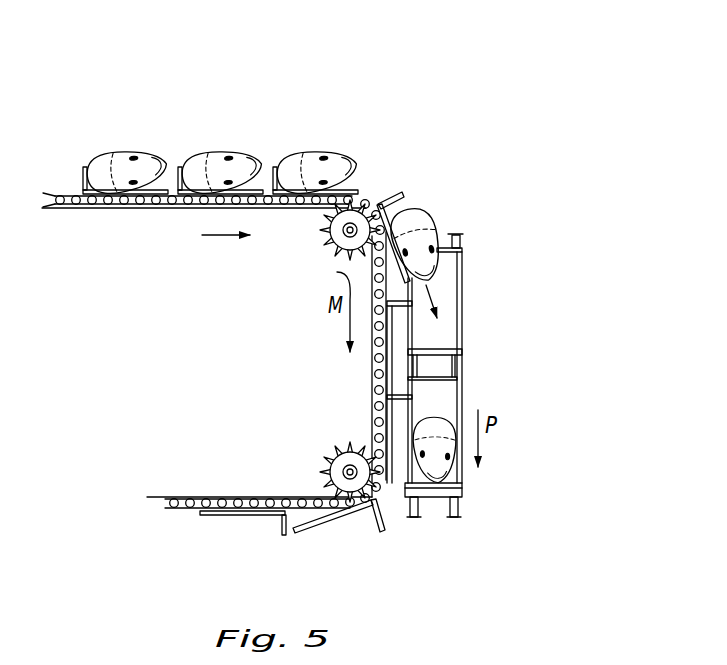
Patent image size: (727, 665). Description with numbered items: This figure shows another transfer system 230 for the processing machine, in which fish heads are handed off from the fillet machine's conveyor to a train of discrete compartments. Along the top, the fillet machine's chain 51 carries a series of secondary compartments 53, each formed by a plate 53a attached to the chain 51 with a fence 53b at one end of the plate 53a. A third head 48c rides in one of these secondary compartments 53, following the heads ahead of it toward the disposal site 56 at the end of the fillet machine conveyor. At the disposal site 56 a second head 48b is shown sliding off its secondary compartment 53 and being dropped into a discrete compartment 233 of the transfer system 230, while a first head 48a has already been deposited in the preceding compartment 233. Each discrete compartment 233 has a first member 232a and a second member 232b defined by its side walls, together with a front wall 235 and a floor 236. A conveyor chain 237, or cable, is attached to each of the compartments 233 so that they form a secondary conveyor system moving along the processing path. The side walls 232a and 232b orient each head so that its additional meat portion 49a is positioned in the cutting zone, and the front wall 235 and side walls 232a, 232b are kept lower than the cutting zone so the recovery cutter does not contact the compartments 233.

The first head 48a is at (453, 467).
The second head 48b is at (463, 233).
The third head 48c is at (314, 152).
The additional meat portion 49a is at (416, 205).
The chain 51 is at (168, 209).
The secondary compartment 53 is at (369, 181).
The plate 53a is at (362, 186).
The fence 53b is at (85, 188).
The disposal site 56 is at (454, 215).
The transfer system 230 is at (505, 360).
The first member 232a is at (413, 333).
The second member 232b is at (463, 304).
The discrete compartment 233 is at (487, 360).
The front wall 235 is at (444, 347).
The floor 236 is at (451, 266).
The conveyor chain 237 is at (421, 386).